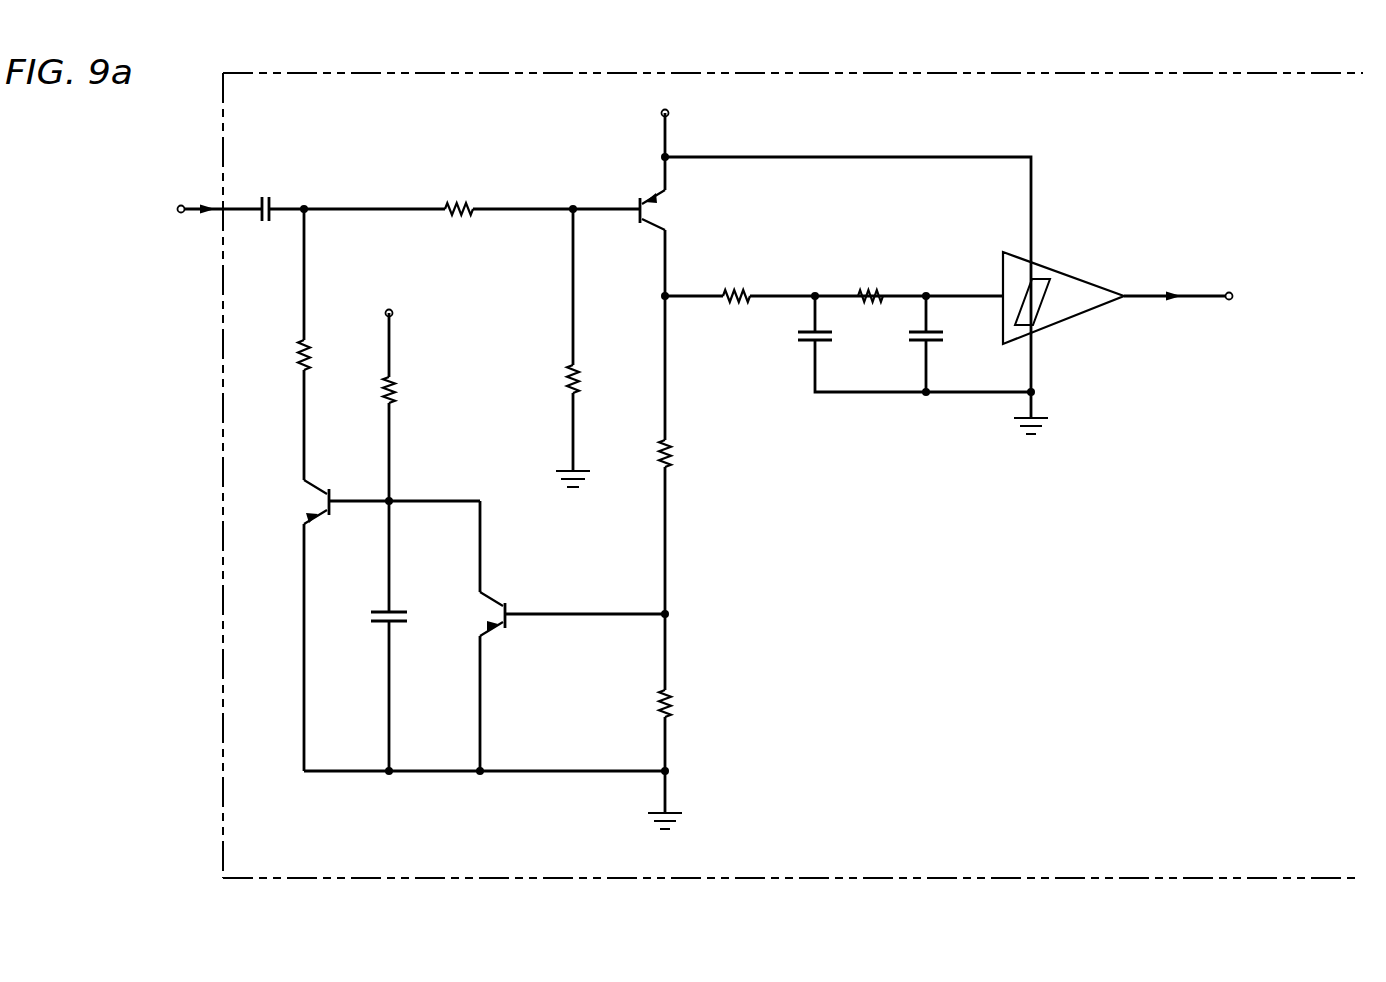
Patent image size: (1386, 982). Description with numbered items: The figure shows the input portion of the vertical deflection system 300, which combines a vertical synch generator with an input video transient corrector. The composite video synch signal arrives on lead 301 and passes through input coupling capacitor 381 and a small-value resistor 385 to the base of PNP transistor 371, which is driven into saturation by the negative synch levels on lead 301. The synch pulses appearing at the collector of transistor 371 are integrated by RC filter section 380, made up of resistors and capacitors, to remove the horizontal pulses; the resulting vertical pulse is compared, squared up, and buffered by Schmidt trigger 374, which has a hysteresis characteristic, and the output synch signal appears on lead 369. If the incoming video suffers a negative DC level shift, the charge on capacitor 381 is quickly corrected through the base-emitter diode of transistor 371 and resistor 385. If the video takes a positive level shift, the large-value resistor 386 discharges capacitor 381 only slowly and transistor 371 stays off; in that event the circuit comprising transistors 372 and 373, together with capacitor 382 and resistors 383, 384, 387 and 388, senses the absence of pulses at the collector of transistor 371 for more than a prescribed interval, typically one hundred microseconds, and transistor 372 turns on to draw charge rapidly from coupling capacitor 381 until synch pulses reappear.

The vertical deflection system 300 is at (221, 762).
The lead 301 is at (181, 204).
The lead 369 is at (1232, 292).
The PNP transistor 371 is at (668, 226).
The transistor 372 is at (326, 505).
The transistor 373 is at (500, 612).
The Schmidt trigger 374 is at (1068, 262).
The RC filter section 380 is at (886, 393).
The input coupling capacitor 381 is at (272, 200).
The capacitor 382 is at (385, 613).
The resistor 383 is at (302, 345).
The resistor 384 is at (395, 390).
The resistor 385 is at (460, 200).
The resistor 386 is at (580, 368).
The resistor 387 is at (672, 446).
The resistor 388 is at (672, 702).